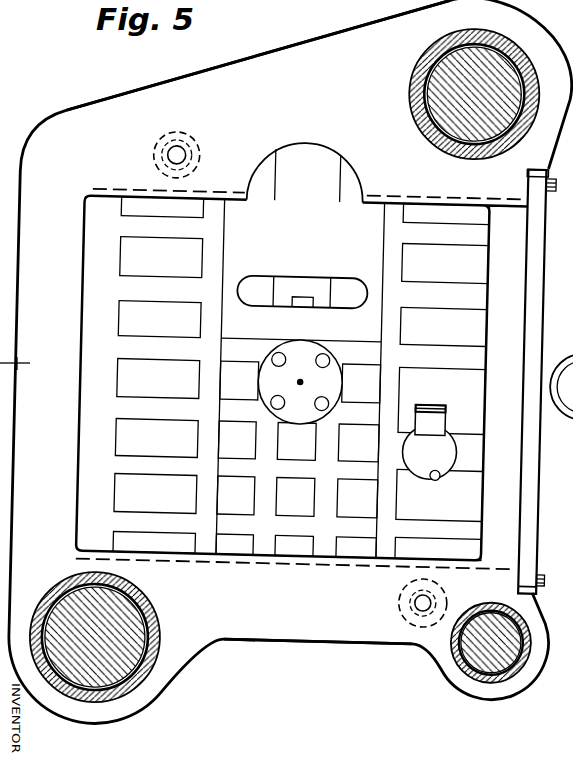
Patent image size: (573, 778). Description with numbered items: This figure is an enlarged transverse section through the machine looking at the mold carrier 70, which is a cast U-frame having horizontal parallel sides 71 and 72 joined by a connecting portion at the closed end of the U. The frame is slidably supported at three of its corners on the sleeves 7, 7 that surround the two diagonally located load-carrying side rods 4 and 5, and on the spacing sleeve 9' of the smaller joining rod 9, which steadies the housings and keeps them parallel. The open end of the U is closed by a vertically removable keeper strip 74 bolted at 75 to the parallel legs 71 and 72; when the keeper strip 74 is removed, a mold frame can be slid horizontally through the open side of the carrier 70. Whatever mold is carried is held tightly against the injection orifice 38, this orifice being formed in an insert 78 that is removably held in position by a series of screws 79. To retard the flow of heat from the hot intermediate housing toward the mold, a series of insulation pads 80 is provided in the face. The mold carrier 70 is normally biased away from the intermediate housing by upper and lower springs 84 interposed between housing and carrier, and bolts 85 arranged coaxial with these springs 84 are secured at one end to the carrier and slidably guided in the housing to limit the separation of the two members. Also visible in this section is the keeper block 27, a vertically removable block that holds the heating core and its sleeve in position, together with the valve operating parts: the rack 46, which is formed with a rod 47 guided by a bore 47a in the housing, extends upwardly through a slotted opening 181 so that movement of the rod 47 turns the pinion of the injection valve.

The mold carrier 70 is at (57, 118).
The side of the U-frame 71 is at (272, 78).
The side of the U-frame 72 is at (297, 622).
The keeper strip 74 is at (564, 253).
The bolt 75 is at (552, 184).
The side rod 4 is at (446, 65).
The sleeve 7 is at (411, 82).
The side rod 5 is at (125, 613).
The joining rod 9 is at (490, 627).
The spacing sleeve 9' is at (491, 639).
The keeper block 27 is at (323, 172).
The insulation pad 80 is at (122, 292).
The insert 78 is at (302, 348).
The screw 79 is at (318, 364).
The injection orifice 38 is at (303, 382).
The rack 46 is at (432, 429).
The rod 47 is at (437, 451).
The bore 47a is at (436, 476).
The slotted opening 181 is at (443, 417).
The spring 84 is at (195, 156).
The bolt 85 is at (188, 147).